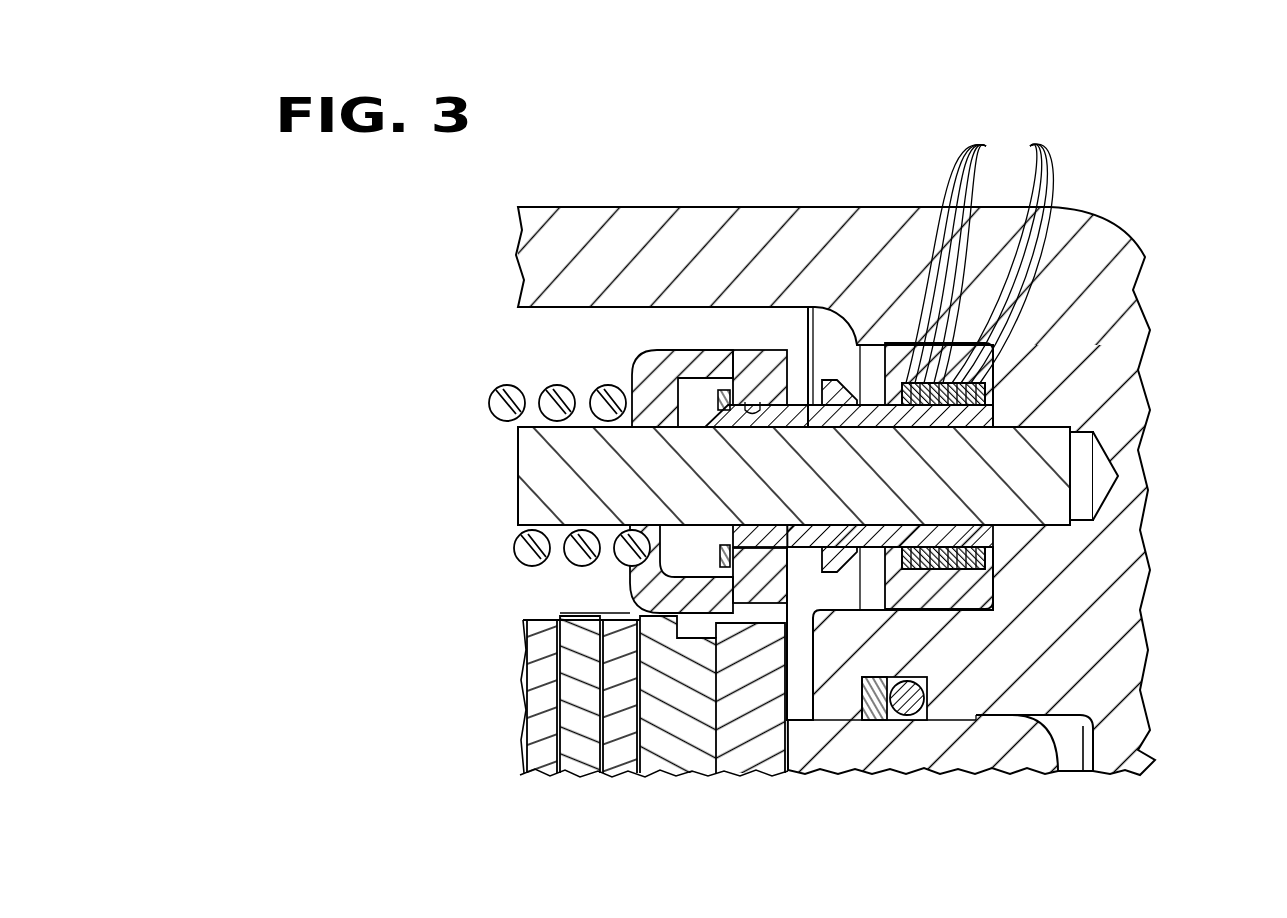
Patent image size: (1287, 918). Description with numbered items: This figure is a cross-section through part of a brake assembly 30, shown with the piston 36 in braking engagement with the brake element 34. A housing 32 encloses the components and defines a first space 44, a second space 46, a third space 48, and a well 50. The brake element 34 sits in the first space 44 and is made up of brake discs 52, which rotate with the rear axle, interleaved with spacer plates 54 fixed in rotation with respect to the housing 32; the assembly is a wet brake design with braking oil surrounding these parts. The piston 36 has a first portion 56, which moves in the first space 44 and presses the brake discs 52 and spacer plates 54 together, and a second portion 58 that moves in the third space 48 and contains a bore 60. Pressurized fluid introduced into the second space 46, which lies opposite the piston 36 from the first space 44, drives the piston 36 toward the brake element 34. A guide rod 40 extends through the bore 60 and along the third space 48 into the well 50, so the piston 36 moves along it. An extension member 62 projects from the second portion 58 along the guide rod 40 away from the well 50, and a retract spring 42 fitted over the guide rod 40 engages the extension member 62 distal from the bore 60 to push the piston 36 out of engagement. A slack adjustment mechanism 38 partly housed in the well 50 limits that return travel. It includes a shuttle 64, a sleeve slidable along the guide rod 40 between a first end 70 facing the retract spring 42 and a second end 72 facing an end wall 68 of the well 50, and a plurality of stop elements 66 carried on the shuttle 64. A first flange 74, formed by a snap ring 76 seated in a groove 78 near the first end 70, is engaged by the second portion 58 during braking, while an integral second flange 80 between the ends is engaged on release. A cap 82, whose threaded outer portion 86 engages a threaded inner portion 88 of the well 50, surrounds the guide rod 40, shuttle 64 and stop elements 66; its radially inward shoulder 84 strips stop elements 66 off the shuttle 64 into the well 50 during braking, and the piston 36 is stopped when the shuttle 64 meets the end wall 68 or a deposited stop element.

The brake assembly 30 is at (1128, 178).
The housing 32 is at (851, 207).
The brake element 34 is at (615, 737).
The piston 36 is at (925, 781).
The slack adjustment mechanism 38 is at (1003, 360).
The guide rod 40 is at (555, 440).
The retract spring 42 is at (572, 545).
The first space 44 is at (615, 614).
The second space 46 is at (1072, 748).
The third space 48 is at (605, 312).
The well 50 is at (995, 404).
The brake discs 52 is at (540, 775).
The spacer plates 54 is at (570, 775).
The first portion 56 is at (772, 752).
The second portion 58 is at (745, 350).
The bore 60 is at (752, 402).
The extension member 62 is at (655, 352).
The shuttle 64 is at (829, 376).
The stop elements 66 is at (977, 352).
The end wall 68 is at (992, 410).
The first end 70 is at (678, 380).
The second end 72 is at (982, 537).
The first flange 74 is at (713, 553).
The ring 76 is at (720, 397).
The groove 78 is at (730, 414).
The second flange 80 is at (838, 575).
The cap 82 is at (893, 357).
The shoulder 84 is at (898, 394).
The threaded outer portion 86 is at (925, 612).
The threaded inner portion 88 is at (912, 612).